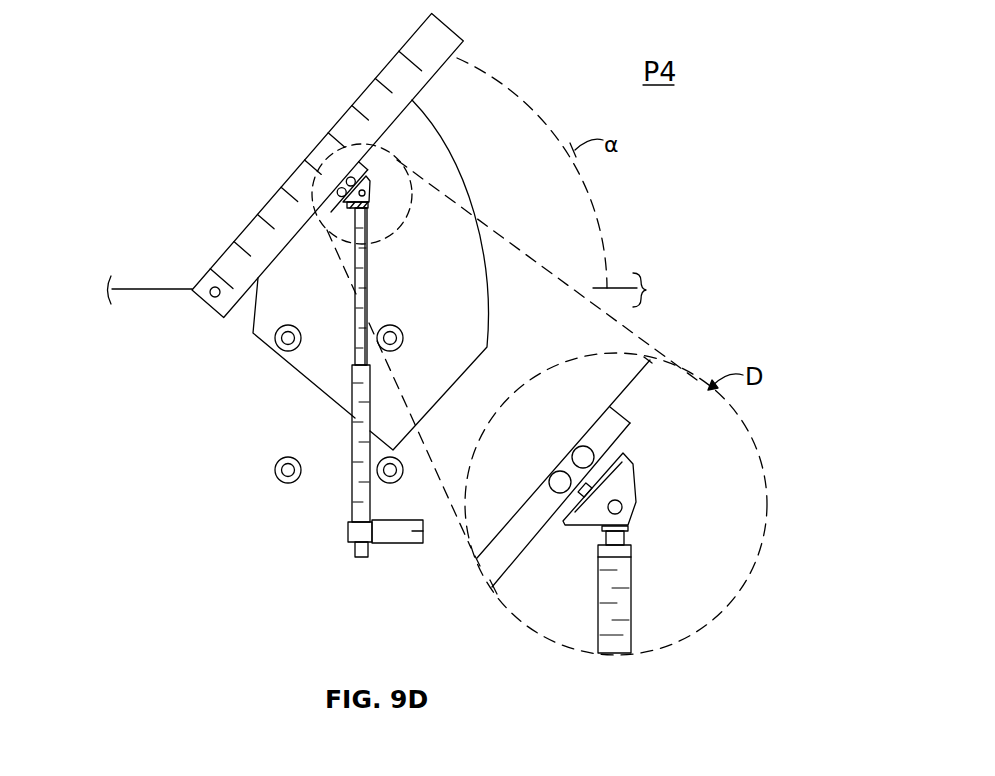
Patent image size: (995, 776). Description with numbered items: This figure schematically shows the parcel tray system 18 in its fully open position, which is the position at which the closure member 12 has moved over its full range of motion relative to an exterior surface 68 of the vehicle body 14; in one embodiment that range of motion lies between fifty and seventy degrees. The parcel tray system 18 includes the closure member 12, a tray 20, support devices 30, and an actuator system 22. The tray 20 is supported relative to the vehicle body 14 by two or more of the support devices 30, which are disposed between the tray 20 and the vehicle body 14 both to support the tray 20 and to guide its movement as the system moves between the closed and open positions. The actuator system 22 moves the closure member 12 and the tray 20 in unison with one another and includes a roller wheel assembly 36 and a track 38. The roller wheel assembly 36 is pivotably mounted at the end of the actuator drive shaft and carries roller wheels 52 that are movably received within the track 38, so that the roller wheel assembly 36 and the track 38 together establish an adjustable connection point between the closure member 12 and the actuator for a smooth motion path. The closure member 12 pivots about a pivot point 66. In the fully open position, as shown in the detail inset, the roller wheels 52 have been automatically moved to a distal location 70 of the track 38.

The closure member 12 is at (372, 82).
The vehicle body 14 is at (617, 289).
The parcel tray system 18 is at (261, 173).
The tray 20 is at (318, 375).
The actuator system 22 is at (345, 508).
The support devices 30 is at (274, 342).
The roller wheel assembly 36 is at (586, 531).
The track 38 is at (627, 427).
The roller wheels 52 is at (573, 448).
The pivot point 66 is at (212, 297).
The exterior surface 68 is at (642, 284).
The distal location 70 is at (589, 422).